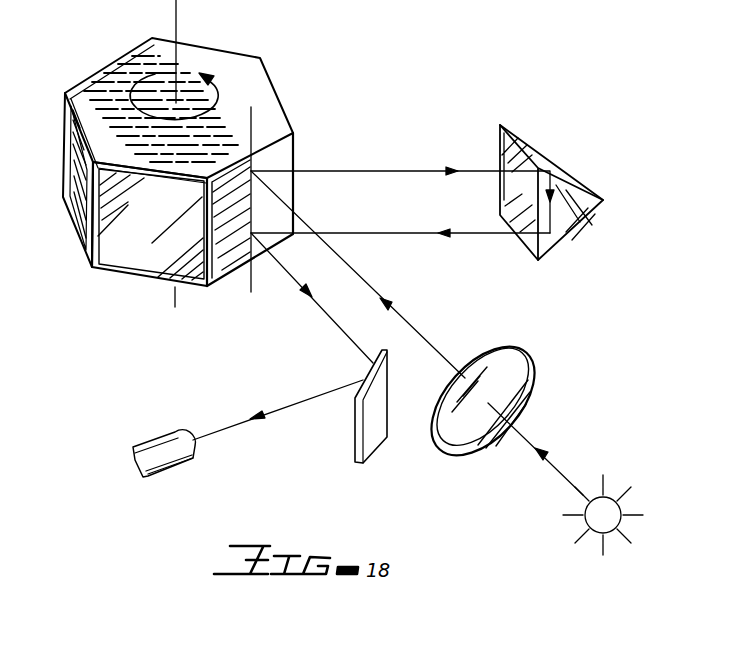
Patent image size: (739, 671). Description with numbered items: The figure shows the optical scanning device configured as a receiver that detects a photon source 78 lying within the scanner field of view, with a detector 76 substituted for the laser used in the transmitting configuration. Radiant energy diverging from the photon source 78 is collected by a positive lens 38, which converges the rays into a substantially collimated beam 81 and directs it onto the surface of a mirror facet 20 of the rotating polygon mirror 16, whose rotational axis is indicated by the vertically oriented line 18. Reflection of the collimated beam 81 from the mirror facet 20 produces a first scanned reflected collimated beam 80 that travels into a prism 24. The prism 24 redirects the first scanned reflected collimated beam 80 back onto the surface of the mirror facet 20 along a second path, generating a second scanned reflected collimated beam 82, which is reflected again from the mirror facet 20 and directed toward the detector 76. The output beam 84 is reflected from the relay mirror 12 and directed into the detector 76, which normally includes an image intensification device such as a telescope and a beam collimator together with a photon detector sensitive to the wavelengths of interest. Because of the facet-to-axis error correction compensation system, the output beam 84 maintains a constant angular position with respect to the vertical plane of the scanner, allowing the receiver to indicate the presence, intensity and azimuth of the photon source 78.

The relay mirror 12 is at (370, 440).
The rotating polygon mirror 16 is at (250, 64).
The rotational axis 18 is at (177, 14).
The mirror facet 20 is at (290, 152).
The prism 24 is at (531, 150).
The positive lens 38 is at (531, 362).
The detector 76 is at (140, 440).
The photon source 78 is at (612, 502).
The first scanned reflected collimated beam 80 is at (370, 168).
The collimated beam 81 is at (422, 332).
The second scanned reflected collimated beam 82 is at (404, 232).
The output beam 84 is at (305, 400).